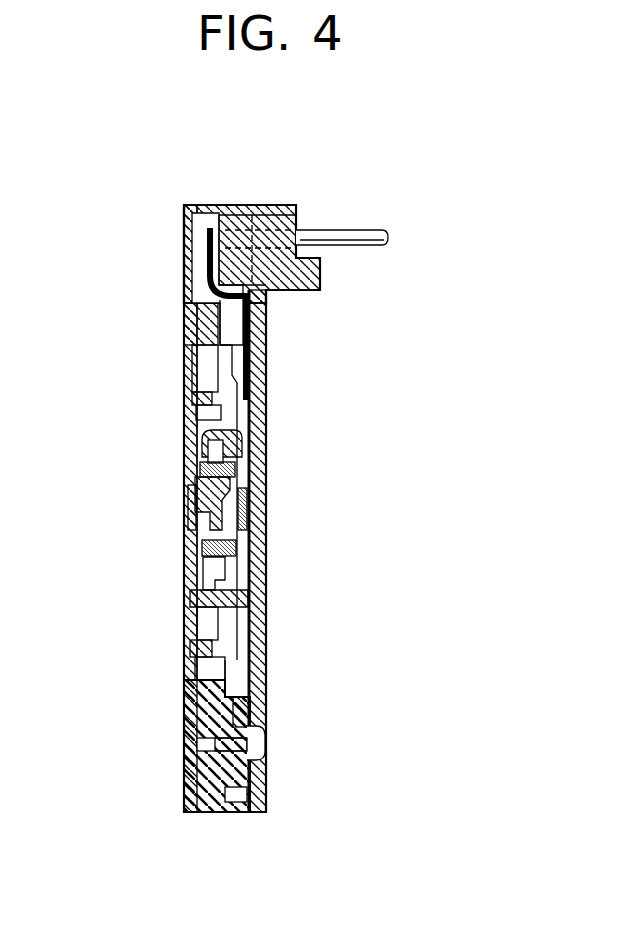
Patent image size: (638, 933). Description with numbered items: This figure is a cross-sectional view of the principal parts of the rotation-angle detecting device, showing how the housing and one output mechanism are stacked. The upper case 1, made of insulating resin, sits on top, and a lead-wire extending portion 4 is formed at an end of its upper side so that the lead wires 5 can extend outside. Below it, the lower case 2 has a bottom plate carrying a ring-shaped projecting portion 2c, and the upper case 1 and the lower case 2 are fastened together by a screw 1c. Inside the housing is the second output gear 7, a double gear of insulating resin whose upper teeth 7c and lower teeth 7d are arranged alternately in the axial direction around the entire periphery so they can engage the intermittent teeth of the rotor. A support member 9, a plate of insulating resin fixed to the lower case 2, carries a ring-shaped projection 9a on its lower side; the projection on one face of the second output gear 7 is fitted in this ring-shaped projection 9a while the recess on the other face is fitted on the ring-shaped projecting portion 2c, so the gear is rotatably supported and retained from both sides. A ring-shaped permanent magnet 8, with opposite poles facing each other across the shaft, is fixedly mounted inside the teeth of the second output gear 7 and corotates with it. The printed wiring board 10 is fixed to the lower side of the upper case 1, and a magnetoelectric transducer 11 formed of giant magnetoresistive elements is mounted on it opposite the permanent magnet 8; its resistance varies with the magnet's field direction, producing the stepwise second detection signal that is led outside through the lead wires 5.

The upper case 1 is at (280, 646).
The screw 1c is at (262, 735).
The lower case 2 is at (178, 722).
The ring-shaped projecting portion 2c is at (190, 528).
The lead-wire extending portion 4 is at (268, 202).
The lead wires 5 is at (357, 230).
The second output gear 7 is at (180, 546).
The upper teeth 7c is at (242, 441).
The lower teeth 7d is at (208, 455).
The ring-shaped permanent magnet 8 is at (200, 564).
The support member 9 is at (200, 613).
The ring-shaped projection 9a is at (236, 474).
The printed wiring board 10 is at (240, 545).
The magnetoelectric transducer 11 is at (246, 490).